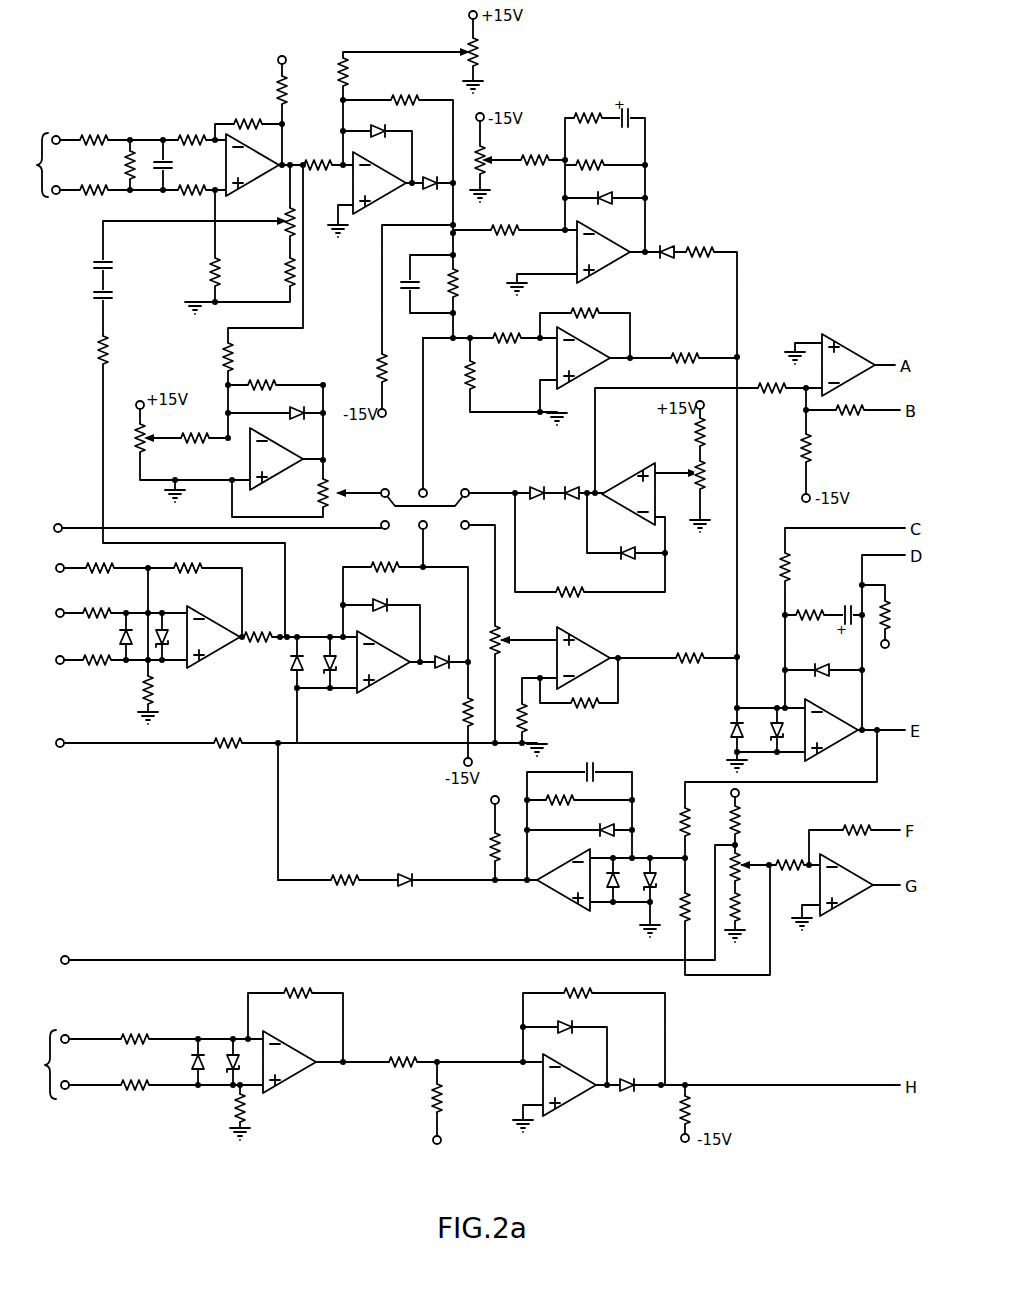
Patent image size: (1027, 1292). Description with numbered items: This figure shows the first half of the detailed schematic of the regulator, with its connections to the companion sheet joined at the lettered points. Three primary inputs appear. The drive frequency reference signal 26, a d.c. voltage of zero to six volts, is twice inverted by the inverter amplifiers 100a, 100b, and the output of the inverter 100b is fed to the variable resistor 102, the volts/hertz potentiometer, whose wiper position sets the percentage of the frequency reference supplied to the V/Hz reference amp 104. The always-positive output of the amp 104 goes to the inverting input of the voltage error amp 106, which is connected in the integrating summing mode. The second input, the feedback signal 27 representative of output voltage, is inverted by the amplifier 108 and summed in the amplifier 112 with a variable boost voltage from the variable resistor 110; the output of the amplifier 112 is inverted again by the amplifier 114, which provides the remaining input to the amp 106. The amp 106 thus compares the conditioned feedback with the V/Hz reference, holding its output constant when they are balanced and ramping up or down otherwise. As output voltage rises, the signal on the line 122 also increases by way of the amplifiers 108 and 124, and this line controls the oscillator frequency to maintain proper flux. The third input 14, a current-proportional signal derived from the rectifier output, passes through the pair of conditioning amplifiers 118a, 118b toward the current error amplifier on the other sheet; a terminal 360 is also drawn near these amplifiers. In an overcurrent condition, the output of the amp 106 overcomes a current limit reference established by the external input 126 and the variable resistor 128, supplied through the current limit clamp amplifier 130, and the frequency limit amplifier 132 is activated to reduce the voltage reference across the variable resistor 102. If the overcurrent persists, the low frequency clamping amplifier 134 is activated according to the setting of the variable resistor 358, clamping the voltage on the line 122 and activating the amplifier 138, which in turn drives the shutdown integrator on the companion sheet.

The feedback signal 27 is at (62, 165).
The amplifier 108 is at (245, 174).
The variable resistor 110 is at (481, 62).
The amplifier 112 is at (384, 187).
The amplifier 114 is at (575, 345).
The amplifier 138 is at (838, 352).
The variable resistor 358 is at (696, 471).
The low frequency clamping amplifier 134 is at (630, 487).
The amplifier 124 is at (280, 466).
The line 122 is at (42, 529).
The drive frequency reference signal 26 is at (71, 654).
The inverter amplifier 100a is at (207, 662).
The inverter amplifier 100b is at (388, 677).
The variable resistor 102 is at (502, 638).
The V/Hz reference amp 104 is at (594, 652).
The voltage error amp 106 is at (834, 735).
The frequency limit amplifier 132 is at (566, 890).
The variable resistor 128 is at (746, 860).
The current limit clamp amplifier 130 is at (848, 906).
The external input 126 is at (45, 961).
The third input 14 is at (88, 1064).
The conditioning amplifier 118a is at (287, 1078).
The conditioning amplifier 118b is at (577, 1100).
The terminal 360 is at (437, 1128).